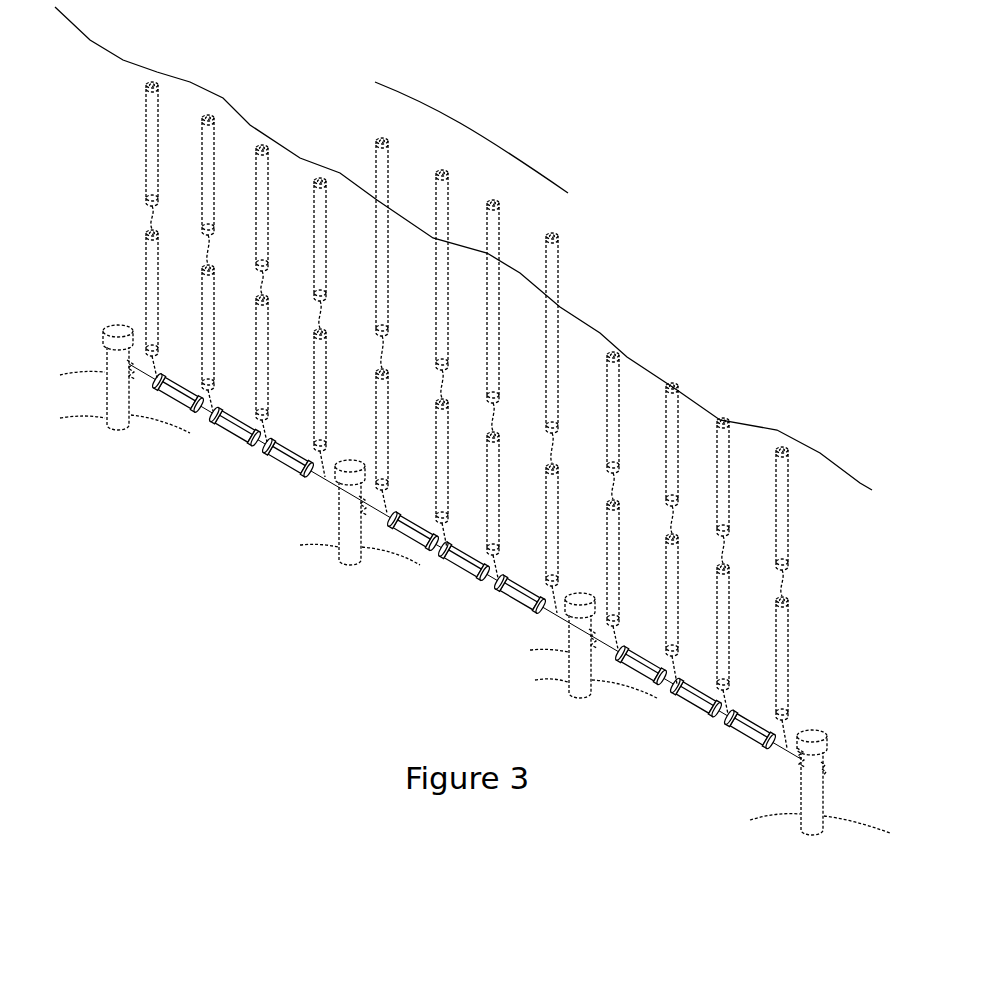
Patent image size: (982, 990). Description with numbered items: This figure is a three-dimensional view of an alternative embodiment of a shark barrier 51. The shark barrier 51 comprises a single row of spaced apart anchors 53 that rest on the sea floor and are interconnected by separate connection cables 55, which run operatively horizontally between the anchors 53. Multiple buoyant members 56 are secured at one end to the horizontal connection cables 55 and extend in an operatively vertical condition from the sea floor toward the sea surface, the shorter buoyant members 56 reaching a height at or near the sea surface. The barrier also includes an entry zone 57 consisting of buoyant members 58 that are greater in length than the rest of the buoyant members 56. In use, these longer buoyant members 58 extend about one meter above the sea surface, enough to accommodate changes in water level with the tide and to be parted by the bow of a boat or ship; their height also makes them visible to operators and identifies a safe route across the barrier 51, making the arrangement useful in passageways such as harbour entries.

The shark barrier 51 is at (712, 240).
The anchors 53 is at (106, 360).
The connection cables 55 is at (213, 418).
The buoyant members 56 is at (146, 130).
The zone 57 is at (465, 124).
The buoyant members 58 is at (390, 182).